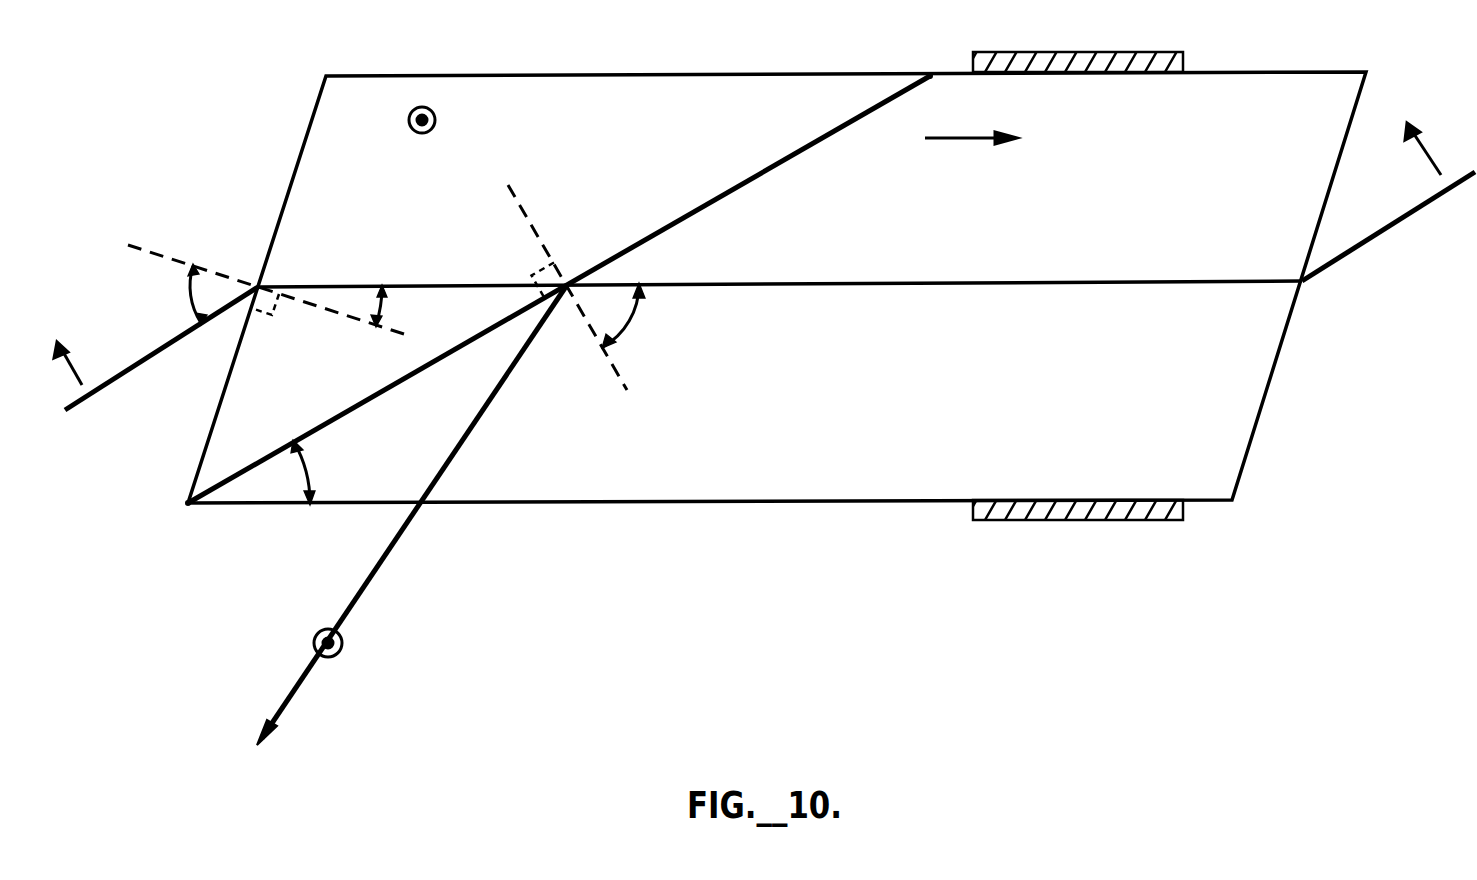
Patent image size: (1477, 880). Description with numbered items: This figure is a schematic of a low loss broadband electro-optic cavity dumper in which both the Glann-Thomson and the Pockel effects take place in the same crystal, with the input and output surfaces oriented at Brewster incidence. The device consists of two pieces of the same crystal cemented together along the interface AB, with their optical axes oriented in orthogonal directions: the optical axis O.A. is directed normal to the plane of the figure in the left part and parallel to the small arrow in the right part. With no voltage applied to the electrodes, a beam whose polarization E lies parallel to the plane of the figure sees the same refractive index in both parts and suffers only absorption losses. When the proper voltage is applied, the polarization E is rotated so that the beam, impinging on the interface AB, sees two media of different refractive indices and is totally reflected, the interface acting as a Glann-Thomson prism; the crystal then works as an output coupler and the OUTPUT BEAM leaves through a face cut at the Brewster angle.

The interface endpoint A is at (175, 517).
The interface endpoint B is at (937, 57).
The electric field polarization vector E is at (740, 377).
The optical axis O.A. is at (752, 131).
The output beam OUTPUT BEAM is at (412, 543).